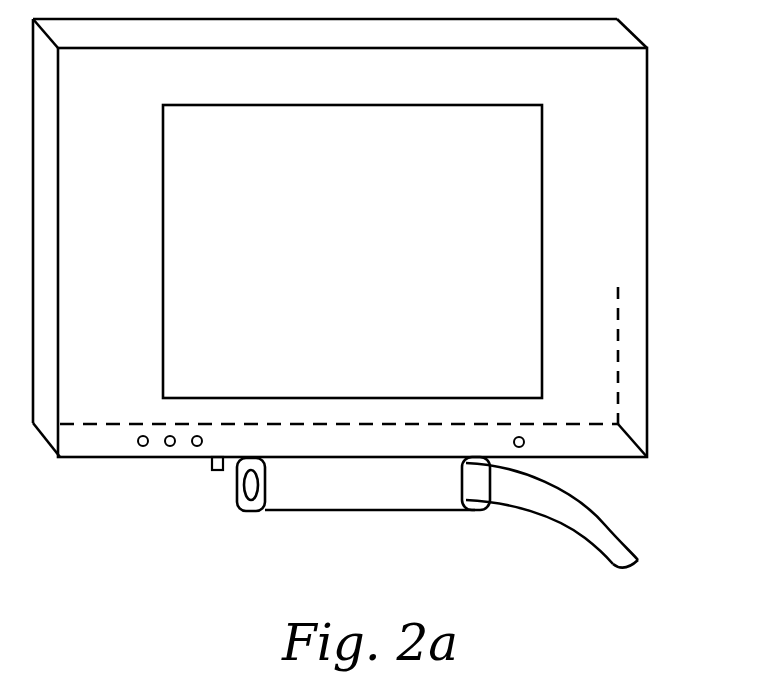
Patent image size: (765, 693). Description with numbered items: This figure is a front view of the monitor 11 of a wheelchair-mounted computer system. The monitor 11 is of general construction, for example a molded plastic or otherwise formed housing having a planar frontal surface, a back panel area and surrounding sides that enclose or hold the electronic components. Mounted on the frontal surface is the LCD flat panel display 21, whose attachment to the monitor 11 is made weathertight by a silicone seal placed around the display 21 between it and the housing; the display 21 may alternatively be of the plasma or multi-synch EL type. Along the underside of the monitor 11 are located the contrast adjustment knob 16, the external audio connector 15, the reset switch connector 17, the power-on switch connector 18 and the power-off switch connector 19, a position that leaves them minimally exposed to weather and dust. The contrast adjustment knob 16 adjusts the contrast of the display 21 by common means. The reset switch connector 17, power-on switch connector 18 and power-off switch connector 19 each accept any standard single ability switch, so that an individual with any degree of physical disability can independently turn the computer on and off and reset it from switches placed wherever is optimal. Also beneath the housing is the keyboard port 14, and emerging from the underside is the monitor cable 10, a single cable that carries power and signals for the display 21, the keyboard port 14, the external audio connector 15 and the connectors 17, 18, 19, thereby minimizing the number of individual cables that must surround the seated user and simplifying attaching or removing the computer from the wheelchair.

The monitor cable 10 is at (573, 523).
The monitor 11 is at (652, 121).
The keyboard port 14 is at (248, 512).
The external audio connector 15 is at (524, 442).
The contrast adjustment knob 16 is at (216, 472).
The reset switch connector 17 is at (195, 447).
The power-on switch connector 18 is at (167, 447).
The power-off switch connector 19 is at (139, 446).
The LCD flat panel display 21 is at (542, 226).